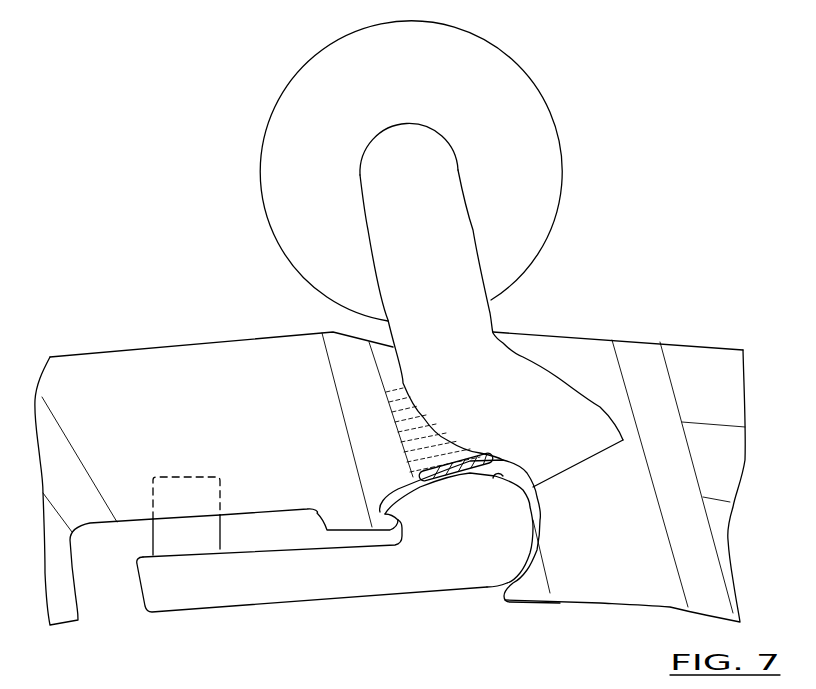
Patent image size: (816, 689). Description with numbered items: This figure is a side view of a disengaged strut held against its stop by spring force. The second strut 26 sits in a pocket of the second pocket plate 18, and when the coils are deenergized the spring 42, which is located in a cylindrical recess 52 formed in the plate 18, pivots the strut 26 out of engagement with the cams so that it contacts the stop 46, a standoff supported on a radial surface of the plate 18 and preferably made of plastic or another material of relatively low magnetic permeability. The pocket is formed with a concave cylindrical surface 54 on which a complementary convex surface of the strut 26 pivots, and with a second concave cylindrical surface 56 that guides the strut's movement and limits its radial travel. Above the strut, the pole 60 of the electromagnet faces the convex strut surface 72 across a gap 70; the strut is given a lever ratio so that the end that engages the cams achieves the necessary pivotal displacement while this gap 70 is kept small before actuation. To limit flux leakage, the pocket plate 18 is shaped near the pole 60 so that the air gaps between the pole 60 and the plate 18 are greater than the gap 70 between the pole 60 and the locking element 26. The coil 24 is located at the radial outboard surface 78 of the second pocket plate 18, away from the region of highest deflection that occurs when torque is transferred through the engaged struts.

The second pocket plate 18 is at (710, 402).
The coil 24 is at (537, 143).
The second strut 26 is at (257, 603).
The spring 42 is at (412, 422).
The stop 46 is at (153, 538).
The cylindrical recess 52 is at (396, 386).
The concave cylindrical surface 54 is at (392, 518).
The concave cylindrical surface 56 is at (509, 491).
The pole 60 is at (490, 316).
The gap 70 is at (528, 471).
The convex strut surface 72 is at (540, 520).
The radial outboard surface 78 is at (123, 347).